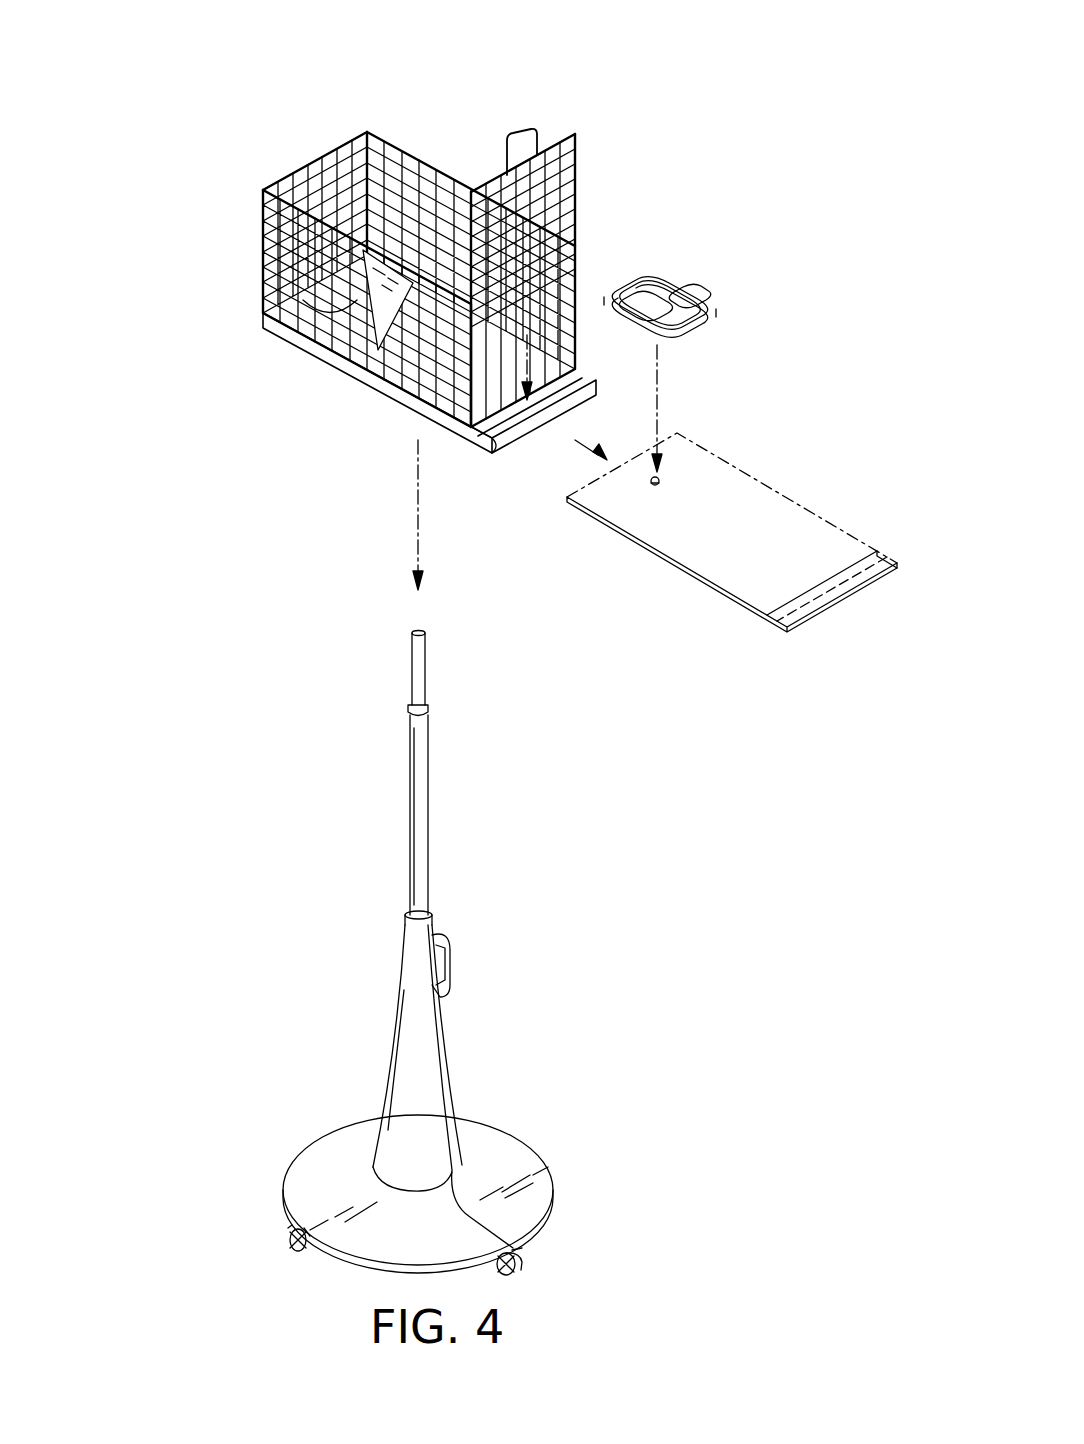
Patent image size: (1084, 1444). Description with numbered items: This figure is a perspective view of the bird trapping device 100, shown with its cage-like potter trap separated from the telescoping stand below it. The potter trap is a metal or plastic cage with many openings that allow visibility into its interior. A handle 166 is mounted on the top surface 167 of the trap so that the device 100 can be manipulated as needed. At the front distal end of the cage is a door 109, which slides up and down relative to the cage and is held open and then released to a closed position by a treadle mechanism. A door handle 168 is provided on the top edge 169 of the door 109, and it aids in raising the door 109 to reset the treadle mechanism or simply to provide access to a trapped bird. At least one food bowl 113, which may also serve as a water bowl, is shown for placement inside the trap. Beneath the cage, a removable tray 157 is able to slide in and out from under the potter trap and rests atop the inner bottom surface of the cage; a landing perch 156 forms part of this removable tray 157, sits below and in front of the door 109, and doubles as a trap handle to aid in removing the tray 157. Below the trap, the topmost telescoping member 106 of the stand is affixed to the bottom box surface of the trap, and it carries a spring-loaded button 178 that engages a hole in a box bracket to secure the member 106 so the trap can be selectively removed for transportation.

The bird trapping device 100 is at (140, 174).
The topmost telescoping member 106 is at (410, 665).
The door 109 is at (574, 195).
The food bowl 113 is at (712, 292).
The landing perch 156 is at (505, 454).
The removable tray 157 is at (773, 508).
The handle 166 is at (397, 172).
The top surface 167 is at (313, 163).
The door handle 168 is at (524, 130).
The top edge 169 is at (566, 140).
The spring-loaded button 178 is at (425, 645).